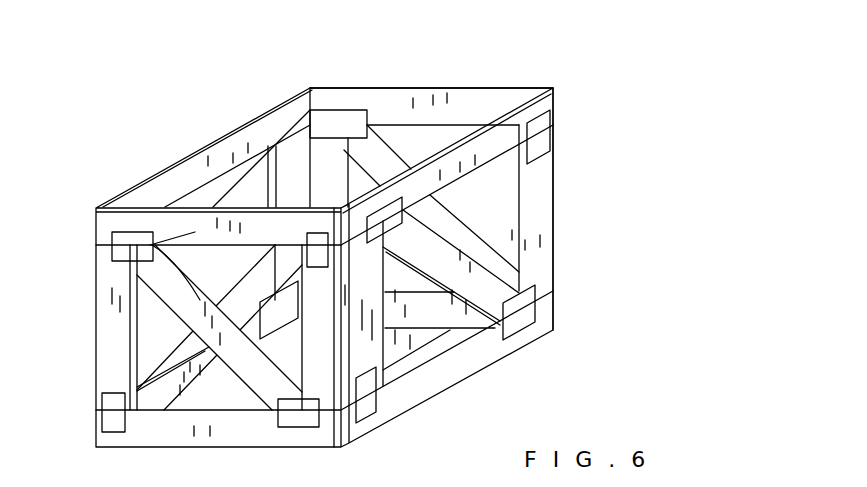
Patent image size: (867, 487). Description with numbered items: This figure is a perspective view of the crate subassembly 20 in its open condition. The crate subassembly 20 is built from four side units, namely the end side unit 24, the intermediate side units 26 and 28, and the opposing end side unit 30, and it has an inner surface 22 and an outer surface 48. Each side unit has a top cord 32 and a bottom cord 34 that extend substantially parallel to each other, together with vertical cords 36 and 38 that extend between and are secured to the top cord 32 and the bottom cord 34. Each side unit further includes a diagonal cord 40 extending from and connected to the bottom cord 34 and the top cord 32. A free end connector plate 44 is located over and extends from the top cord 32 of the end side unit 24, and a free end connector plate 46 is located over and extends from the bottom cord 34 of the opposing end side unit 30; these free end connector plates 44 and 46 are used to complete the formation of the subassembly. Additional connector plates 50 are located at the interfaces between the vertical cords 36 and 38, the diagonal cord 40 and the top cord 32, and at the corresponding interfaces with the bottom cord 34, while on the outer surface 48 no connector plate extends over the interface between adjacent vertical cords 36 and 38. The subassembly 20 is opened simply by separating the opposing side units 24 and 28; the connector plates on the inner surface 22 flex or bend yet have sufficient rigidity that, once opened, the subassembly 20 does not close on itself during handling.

The crate subassembly 20 is at (394, 68).
The inner surface 22 is at (171, 206).
The end side unit 24 is at (234, 131).
The intermediate side unit 26 is at (213, 202).
The intermediate side unit 28 is at (423, 158).
The end side unit 30 is at (449, 83).
The top cord 32 is at (207, 150).
The bottom cord 34 is at (177, 428).
The vertical cord 36 is at (118, 340).
The vertical cord 38 is at (330, 157).
The diagonal cord 40 is at (213, 282).
The free end connector plate 44 is at (331, 110).
The free end connector plate 46 is at (290, 275).
The outer surface 48 is at (120, 219).
The connector plate 50 is at (305, 240).